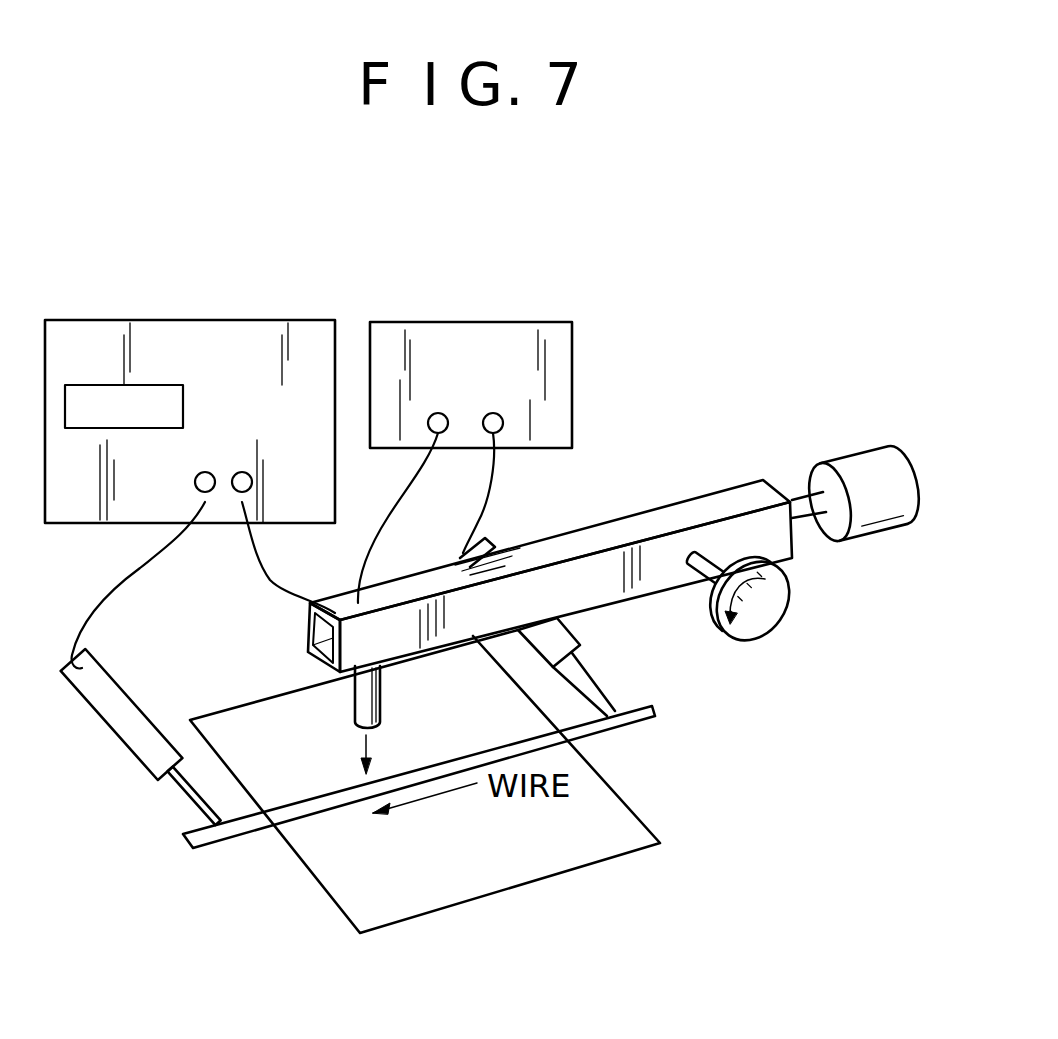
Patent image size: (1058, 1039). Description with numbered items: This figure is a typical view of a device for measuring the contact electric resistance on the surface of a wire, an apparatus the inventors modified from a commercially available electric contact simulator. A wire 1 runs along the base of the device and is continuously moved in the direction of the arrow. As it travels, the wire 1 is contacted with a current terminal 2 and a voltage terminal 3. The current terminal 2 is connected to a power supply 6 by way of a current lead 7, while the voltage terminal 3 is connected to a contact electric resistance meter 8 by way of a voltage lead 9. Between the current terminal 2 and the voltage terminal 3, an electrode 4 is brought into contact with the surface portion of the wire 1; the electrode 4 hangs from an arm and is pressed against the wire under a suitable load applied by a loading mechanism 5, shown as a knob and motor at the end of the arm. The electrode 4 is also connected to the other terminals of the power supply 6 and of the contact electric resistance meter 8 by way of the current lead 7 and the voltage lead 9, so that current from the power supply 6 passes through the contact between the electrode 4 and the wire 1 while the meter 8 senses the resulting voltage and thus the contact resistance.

The wire 1 is at (257, 828).
The current terminal 2 is at (601, 676).
The voltage terminal 3 is at (193, 808).
The electrode 4 is at (378, 696).
The loading mechanism 5 is at (761, 619).
The power supply 6 is at (470, 321).
The current lead 7 is at (378, 529).
The contact electric resistance meter 8 is at (207, 319).
The voltage lead 9 is at (127, 581).